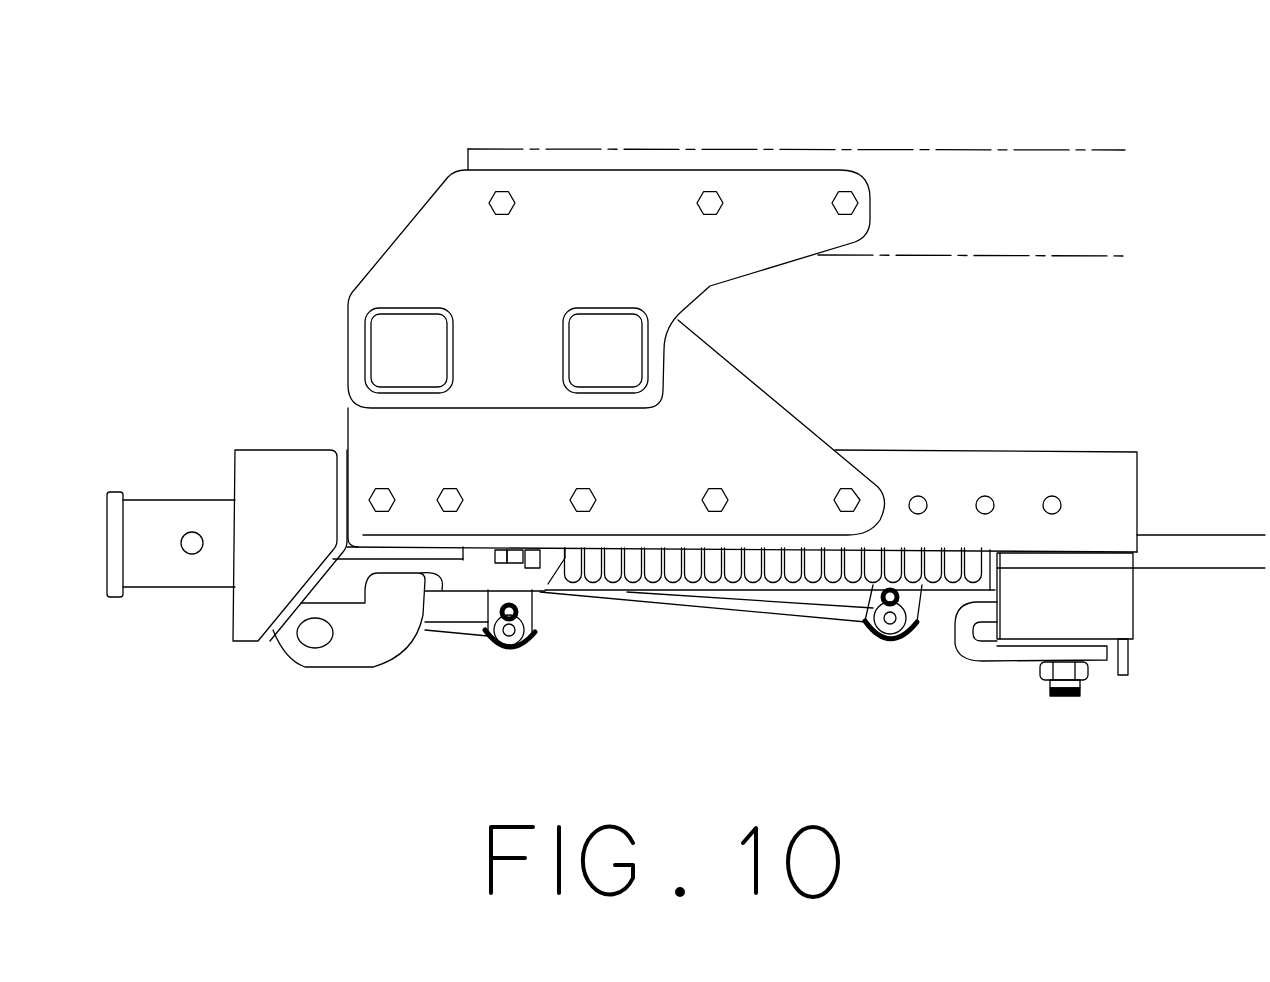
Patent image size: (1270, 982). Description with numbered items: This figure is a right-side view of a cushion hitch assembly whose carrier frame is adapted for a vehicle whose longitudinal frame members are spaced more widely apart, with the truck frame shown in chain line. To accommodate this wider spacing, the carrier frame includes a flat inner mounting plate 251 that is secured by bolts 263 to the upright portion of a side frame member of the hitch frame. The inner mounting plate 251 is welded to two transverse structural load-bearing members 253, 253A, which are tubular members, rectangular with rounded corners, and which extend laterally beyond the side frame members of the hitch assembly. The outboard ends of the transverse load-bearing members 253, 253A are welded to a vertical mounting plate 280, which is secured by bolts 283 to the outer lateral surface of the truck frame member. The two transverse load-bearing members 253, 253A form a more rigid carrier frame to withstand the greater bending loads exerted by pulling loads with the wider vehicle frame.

The inner mounting plate 251 is at (793, 460).
The transverse load-bearing member 253 is at (405, 310).
The transverse load-bearing member 253A is at (647, 360).
The bolts 263 is at (388, 512).
The vertical mounting plate 280 is at (780, 242).
The bolts 283 is at (510, 192).